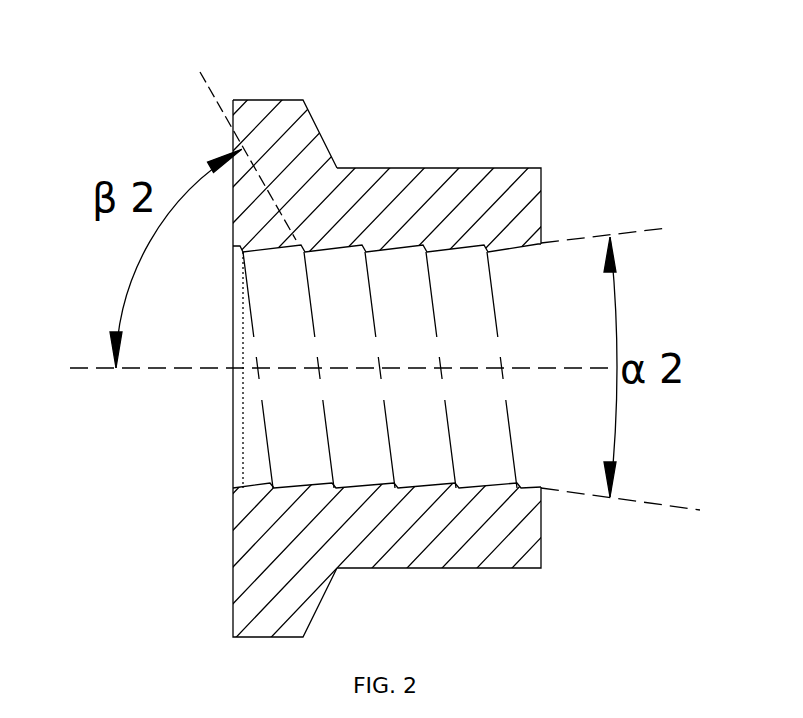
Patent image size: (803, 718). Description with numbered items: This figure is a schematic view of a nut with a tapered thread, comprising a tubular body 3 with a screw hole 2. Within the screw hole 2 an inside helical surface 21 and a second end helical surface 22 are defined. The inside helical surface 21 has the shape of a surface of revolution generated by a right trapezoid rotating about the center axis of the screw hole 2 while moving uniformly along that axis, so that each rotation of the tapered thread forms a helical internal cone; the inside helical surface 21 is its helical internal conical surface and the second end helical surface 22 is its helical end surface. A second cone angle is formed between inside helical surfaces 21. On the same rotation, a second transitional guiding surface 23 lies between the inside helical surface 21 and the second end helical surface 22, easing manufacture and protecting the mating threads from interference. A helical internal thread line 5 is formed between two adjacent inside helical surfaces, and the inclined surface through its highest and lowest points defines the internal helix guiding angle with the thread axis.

The screw hole 2 is at (233, 450).
The tubular body 3 is at (437, 194).
The internal thread line 5 is at (310, 290).
The inside helical surface 21 is at (403, 300).
The second end helical surface 22 is at (450, 425).
The second transitional guiding surface 23 is at (425, 246).